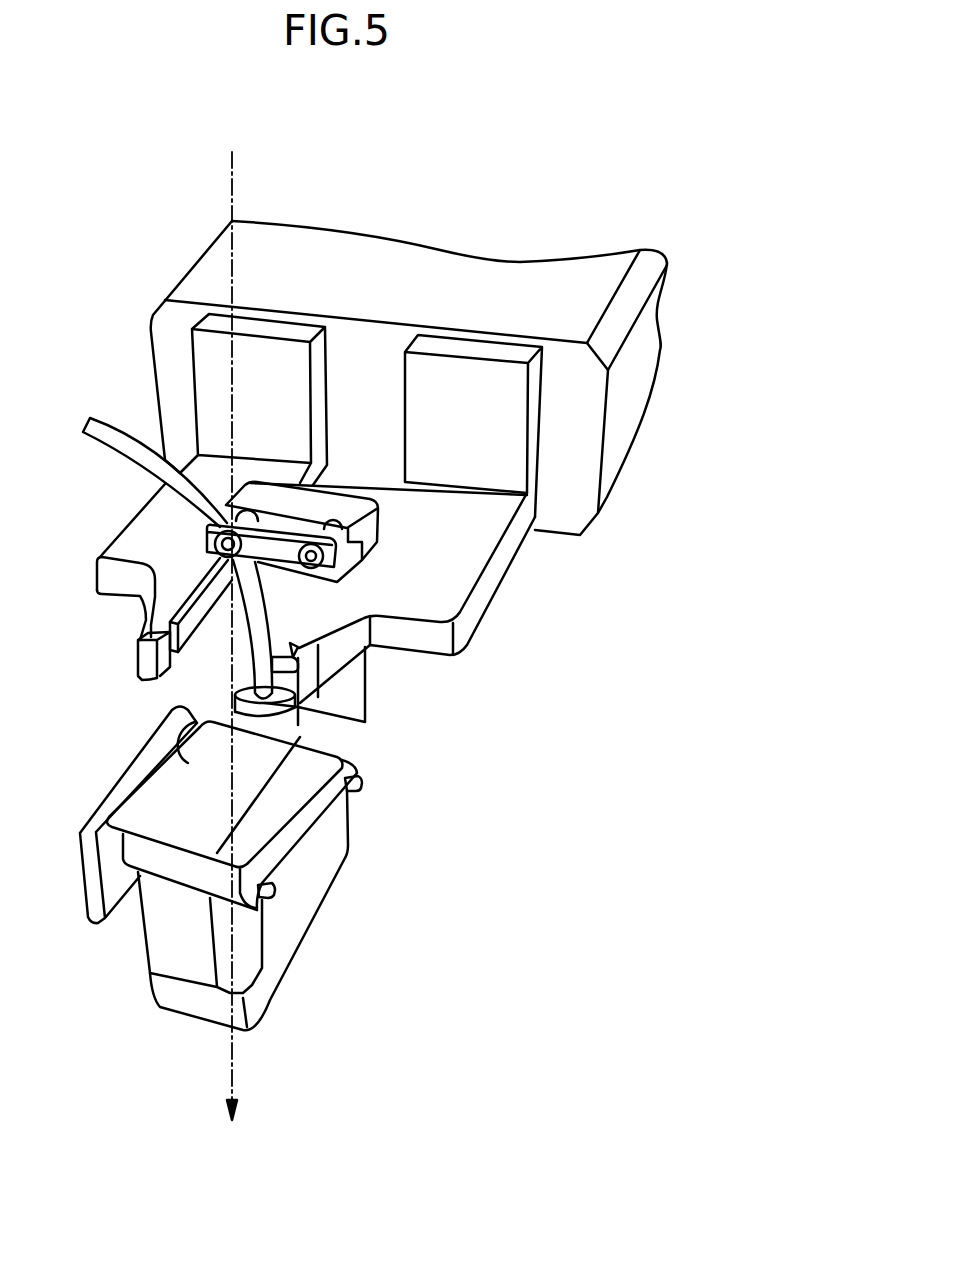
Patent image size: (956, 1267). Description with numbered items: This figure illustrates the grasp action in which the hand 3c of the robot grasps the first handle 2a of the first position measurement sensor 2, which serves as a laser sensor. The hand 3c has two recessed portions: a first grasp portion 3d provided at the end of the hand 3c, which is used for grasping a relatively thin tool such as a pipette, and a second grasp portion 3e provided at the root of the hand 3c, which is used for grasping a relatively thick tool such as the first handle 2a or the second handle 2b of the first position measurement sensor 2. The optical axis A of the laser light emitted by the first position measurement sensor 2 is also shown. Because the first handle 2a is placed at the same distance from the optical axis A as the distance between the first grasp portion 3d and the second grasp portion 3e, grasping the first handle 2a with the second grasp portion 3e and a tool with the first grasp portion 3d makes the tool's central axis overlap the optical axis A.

The first position measurement sensor 2 is at (376, 861).
The first handle 2a is at (257, 565).
The second handle 2b is at (227, 508).
The hand 3c is at (480, 593).
The first grasp portion 3d is at (298, 658).
The second grasp portion 3e is at (374, 545).
The optical axis A is at (232, 1052).